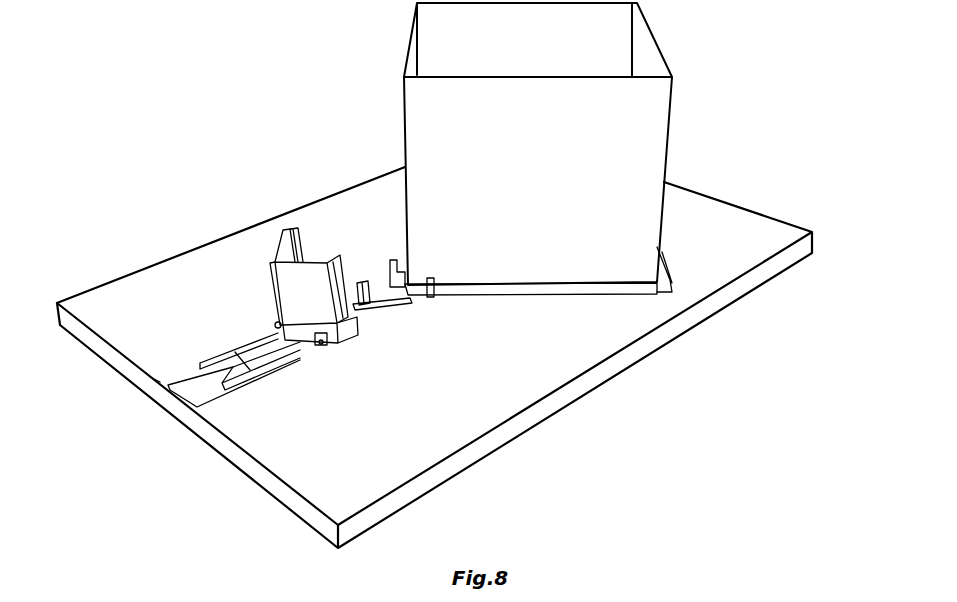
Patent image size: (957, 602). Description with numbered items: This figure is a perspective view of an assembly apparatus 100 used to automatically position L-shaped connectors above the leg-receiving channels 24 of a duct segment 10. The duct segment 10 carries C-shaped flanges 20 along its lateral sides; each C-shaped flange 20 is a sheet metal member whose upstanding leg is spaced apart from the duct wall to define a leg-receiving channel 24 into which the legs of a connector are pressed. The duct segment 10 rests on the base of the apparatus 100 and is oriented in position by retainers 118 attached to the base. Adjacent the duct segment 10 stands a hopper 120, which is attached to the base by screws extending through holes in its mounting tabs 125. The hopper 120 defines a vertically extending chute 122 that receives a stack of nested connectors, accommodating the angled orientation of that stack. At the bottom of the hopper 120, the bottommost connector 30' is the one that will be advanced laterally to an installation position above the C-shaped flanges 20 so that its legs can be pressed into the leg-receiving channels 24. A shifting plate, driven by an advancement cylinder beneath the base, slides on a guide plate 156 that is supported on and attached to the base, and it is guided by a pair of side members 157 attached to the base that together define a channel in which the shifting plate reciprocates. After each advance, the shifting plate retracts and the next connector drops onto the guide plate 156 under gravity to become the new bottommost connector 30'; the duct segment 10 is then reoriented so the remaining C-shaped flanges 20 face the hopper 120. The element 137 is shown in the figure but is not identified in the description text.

The duct segment 10 is at (682, 76).
The C-shaped flange 20 is at (396, 231).
The leg-receiving channel 24 is at (661, 292).
The bottommost connector 30' is at (397, 328).
The assembly apparatus 100 is at (262, 507).
The retainer 118 is at (388, 270).
The hopper 120 is at (282, 290).
The chute 122 is at (278, 247).
The mounting tab 125 is at (277, 324).
The guide rail 137 is at (195, 362).
The guide plate 156 is at (187, 395).
The side member 157 is at (245, 383).